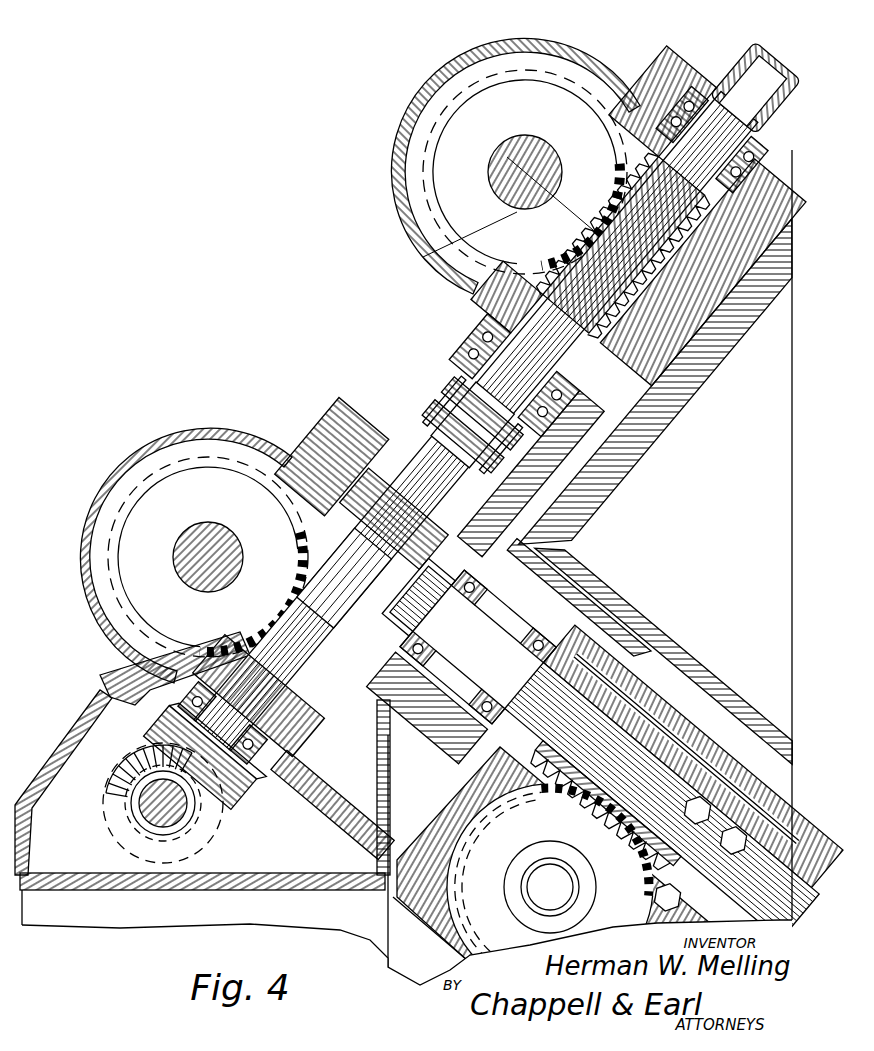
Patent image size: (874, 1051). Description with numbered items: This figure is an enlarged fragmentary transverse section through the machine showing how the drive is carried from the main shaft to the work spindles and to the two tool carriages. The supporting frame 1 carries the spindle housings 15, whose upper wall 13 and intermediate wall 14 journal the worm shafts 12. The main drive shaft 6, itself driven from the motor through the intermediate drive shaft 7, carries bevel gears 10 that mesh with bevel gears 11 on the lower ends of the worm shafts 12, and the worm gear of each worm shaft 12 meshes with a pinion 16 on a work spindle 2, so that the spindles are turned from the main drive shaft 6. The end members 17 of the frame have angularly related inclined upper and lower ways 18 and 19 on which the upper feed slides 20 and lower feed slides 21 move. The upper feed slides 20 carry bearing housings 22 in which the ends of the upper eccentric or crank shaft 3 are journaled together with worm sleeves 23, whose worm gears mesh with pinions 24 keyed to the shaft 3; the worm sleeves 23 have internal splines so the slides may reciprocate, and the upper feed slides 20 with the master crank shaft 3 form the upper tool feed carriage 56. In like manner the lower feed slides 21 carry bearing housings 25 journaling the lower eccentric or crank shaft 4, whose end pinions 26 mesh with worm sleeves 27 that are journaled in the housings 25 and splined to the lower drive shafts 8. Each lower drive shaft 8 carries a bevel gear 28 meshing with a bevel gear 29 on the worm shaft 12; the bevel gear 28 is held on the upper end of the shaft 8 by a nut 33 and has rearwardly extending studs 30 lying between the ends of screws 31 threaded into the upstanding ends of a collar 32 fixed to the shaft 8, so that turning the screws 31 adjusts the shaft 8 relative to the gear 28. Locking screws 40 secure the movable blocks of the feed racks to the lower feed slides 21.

The supporting frame 1 is at (152, 877).
The work spindle 2 is at (228, 541).
The upper eccentric tool carriage shaft 3 is at (540, 160).
The lower eccentric tool carriage shaft 4 is at (540, 887).
The main drive shaft 6 is at (180, 817).
The intermediate drive shaft 7 is at (413, 268).
The lower drive shaft 8 is at (575, 750).
The bevel gear 10 is at (113, 776).
The bevel gear 11 is at (240, 803).
The worm shaft 12 is at (287, 707).
The upper wall 13 is at (340, 440).
The intermediate wall 14 is at (322, 800).
The spindle housing 15 is at (60, 750).
The pinion 16 is at (180, 487).
The end member 17 is at (583, 600).
The upper way 18 is at (660, 422).
The lower way 19 is at (693, 677).
The upper feed slide 20 is at (613, 418).
The lower feed slide 21 is at (647, 680).
The bearing housing 22 is at (472, 58).
The worm sleeve 23 is at (600, 336).
The pinion 24 is at (598, 137).
The bearing housing 25 is at (470, 808).
The pinion 26 is at (470, 940).
The worm sleeve 27 is at (643, 771).
The bevel gear 28 is at (392, 645).
The bevel gear 29 is at (365, 512).
The stud 30 is at (478, 647).
The screw 31 is at (413, 652).
The collar 32 is at (410, 705).
The nut 33 is at (360, 600).
The locking screw 40 is at (703, 807).
The upper tool feed carriage 56 is at (588, 93).